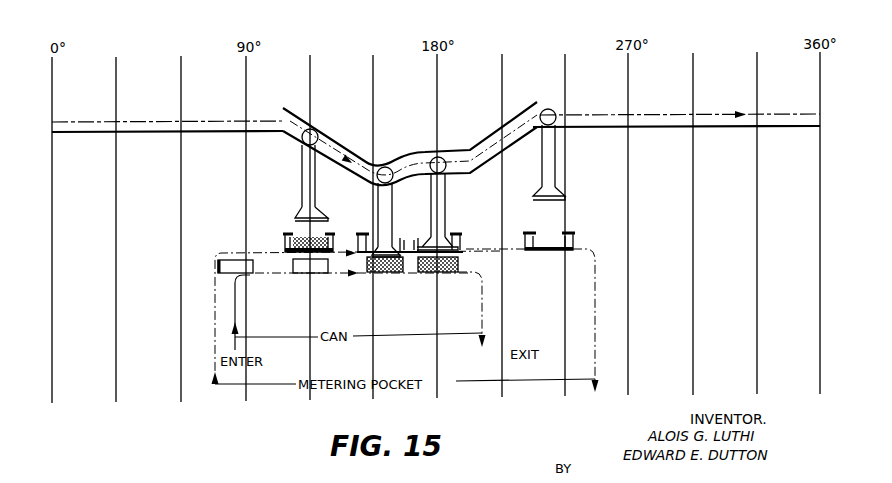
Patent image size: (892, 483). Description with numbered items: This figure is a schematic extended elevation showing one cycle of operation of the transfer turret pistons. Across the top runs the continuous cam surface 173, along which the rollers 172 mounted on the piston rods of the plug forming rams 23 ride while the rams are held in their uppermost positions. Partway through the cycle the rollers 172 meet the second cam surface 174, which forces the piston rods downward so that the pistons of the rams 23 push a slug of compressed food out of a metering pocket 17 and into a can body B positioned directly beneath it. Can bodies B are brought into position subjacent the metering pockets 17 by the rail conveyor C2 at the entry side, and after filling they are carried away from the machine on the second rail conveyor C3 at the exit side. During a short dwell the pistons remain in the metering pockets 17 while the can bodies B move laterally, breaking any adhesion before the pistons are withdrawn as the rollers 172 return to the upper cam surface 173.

The continuous cam surface 173 is at (137, 132).
The roller 172 is at (441, 157).
The second cam surface 174 is at (414, 147).
The plug forming ram 23 is at (301, 187).
The metering pocket 17 is at (283, 240).
The can body B is at (300, 273).
The rail conveyor C2 is at (235, 304).
The second rail conveyor C3 is at (482, 297).